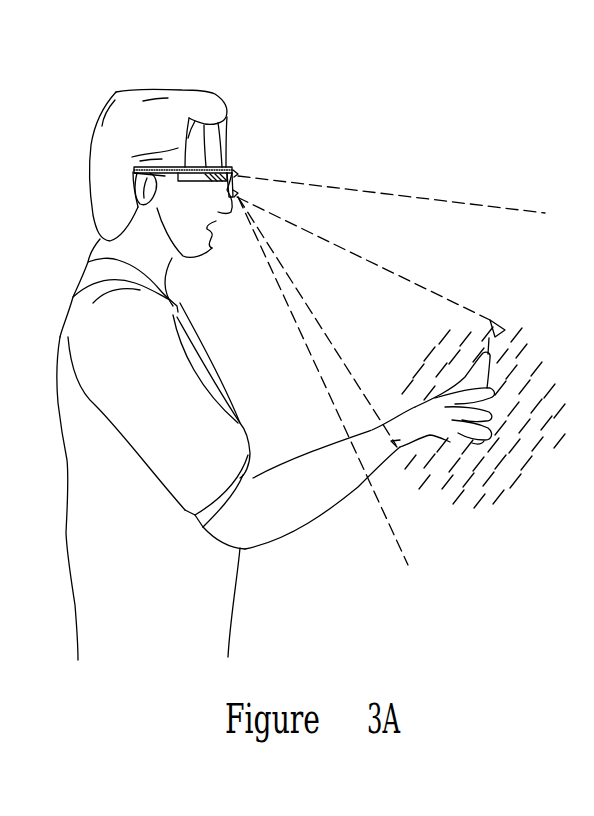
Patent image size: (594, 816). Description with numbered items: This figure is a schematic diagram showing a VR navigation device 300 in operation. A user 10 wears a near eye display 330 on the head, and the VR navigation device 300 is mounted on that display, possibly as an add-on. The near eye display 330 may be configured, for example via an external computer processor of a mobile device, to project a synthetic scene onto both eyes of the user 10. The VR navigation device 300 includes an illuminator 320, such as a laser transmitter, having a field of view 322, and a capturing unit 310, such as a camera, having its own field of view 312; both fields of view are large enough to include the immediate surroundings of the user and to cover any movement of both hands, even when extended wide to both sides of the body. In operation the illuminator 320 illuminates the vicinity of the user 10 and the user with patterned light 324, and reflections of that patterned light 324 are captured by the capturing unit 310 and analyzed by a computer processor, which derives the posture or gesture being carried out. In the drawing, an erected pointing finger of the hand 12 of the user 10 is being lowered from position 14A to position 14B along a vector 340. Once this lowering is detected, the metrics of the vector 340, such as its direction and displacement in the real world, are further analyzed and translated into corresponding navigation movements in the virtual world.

The user 10 is at (66, 258).
The hand 12 is at (428, 433).
The position 14A is at (458, 364).
The position 14B is at (515, 360).
The VR navigation device 300 is at (231, 166).
The capturing unit 310 is at (238, 172).
The field of view 312 is at (487, 209).
The illuminator 320 is at (237, 191).
The field of view 322 is at (352, 290).
The patterned light 324 is at (488, 484).
The near eye display 330 is at (153, 100).
The vector 340 is at (489, 355).